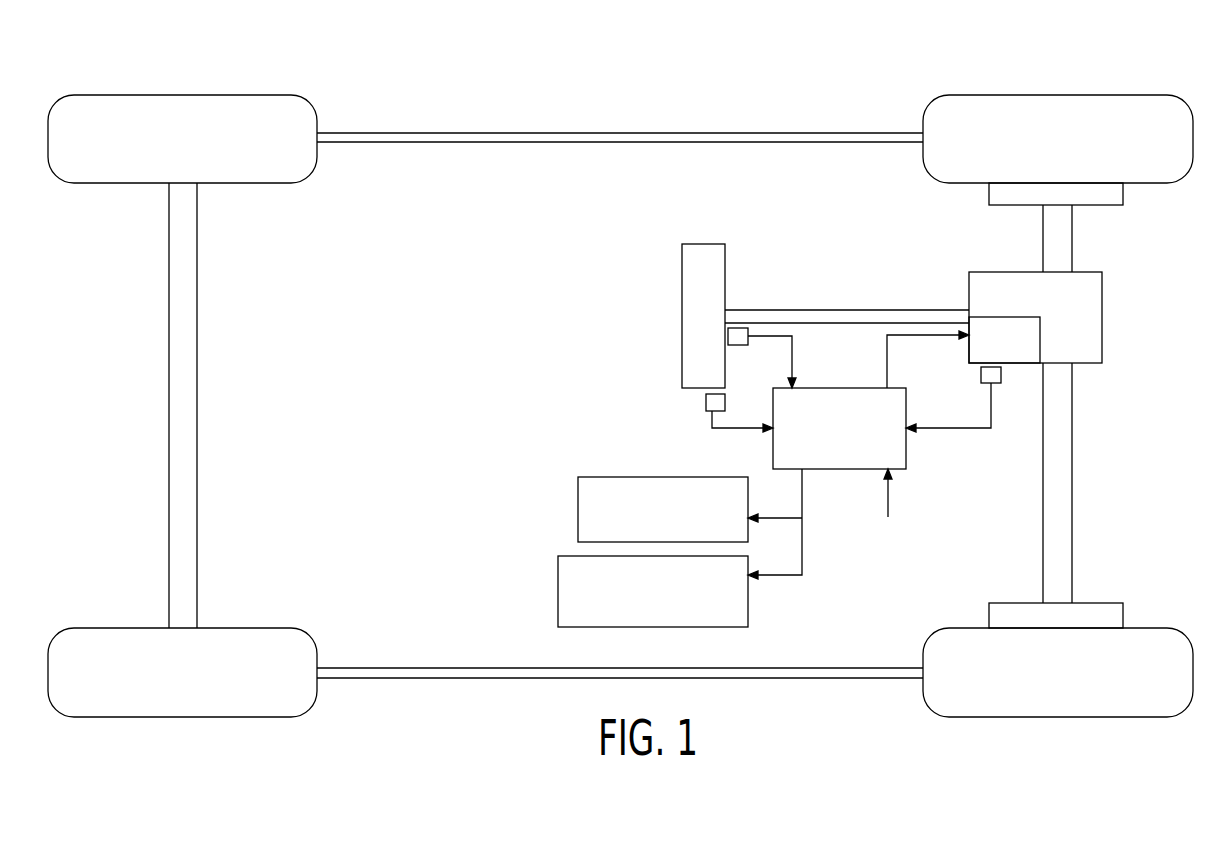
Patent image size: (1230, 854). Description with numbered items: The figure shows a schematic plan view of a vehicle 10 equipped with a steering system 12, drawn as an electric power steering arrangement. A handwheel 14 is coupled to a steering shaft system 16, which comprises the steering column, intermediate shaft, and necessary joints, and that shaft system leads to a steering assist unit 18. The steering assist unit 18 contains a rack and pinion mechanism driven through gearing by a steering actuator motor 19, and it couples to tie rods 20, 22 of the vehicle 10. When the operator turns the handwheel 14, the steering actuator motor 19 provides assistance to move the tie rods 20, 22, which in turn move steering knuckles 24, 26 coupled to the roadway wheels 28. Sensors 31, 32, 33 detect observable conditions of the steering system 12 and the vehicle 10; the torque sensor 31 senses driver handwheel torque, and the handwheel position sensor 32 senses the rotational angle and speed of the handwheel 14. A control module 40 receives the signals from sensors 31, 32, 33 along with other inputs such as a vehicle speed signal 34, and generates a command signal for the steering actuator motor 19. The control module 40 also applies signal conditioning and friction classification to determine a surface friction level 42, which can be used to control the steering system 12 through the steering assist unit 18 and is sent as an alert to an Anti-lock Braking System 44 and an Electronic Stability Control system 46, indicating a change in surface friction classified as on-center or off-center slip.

The vehicle 10 is at (988, 72).
The steering system 12 is at (800, 270).
The handwheel 14 is at (700, 243).
The steering shaft system 16 is at (898, 308).
The steering assist unit 18 is at (1102, 318).
The steering actuator motor 19 is at (1040, 335).
The tie rod 20 is at (1073, 252).
The tie rod 22 is at (1073, 500).
The steering knuckle 24 is at (989, 197).
The steering knuckle 26 is at (1105, 603).
The roadway wheel 28 is at (1113, 95).
The torque sensor 31 is at (743, 328).
The handwheel position sensor 32 is at (981, 375).
The sensor 33 is at (706, 400).
The vehicle speed signal 34 is at (888, 500).
The control module 40 is at (830, 388).
The surface friction level 42 is at (785, 580).
The Anti-lock Braking System 44 is at (578, 503).
The Electronic Stability Control system 46 is at (558, 588).